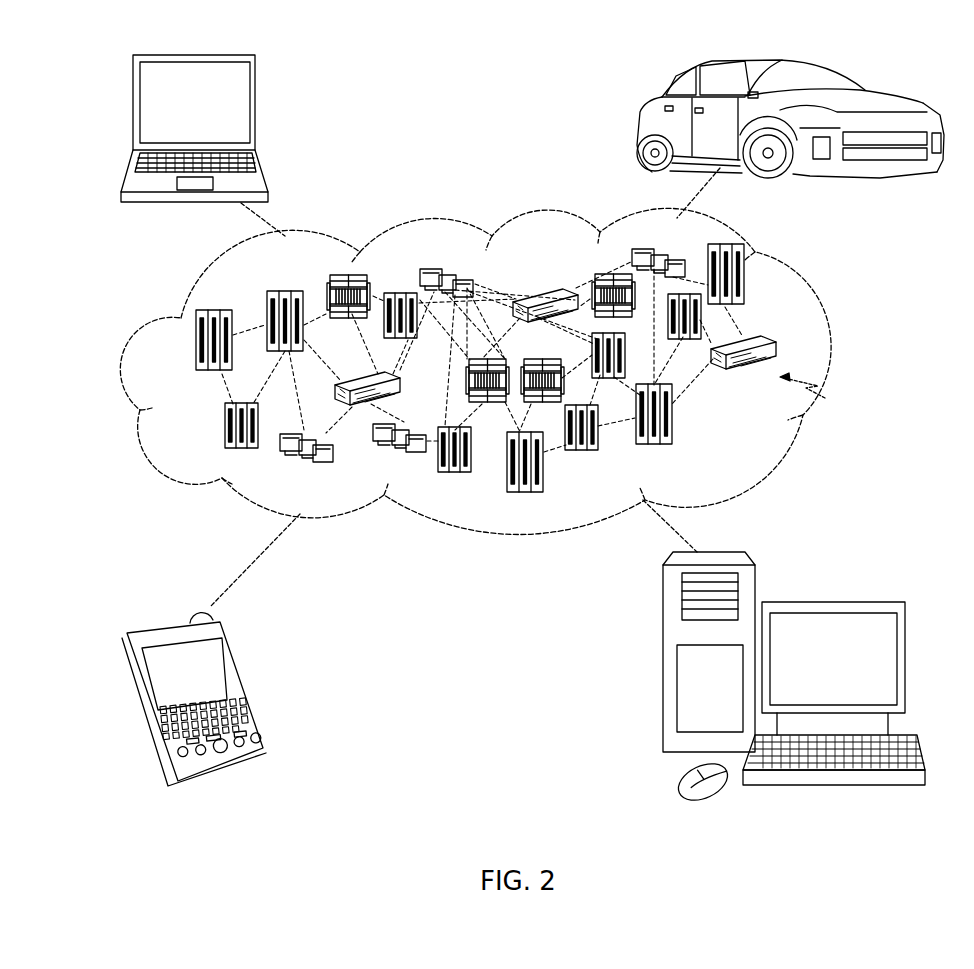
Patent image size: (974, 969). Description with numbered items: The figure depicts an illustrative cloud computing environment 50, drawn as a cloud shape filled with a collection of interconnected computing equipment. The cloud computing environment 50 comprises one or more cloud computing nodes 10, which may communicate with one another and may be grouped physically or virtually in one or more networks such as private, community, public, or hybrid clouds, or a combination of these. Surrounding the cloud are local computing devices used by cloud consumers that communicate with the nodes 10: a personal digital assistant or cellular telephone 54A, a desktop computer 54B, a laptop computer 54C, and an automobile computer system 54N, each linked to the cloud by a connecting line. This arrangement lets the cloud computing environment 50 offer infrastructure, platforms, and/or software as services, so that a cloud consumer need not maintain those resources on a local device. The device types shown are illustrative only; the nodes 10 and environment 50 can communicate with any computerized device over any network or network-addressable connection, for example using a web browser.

The cloud computing node 10 is at (823, 400).
The cloud computing environment 50 is at (833, 350).
The personal digital assistant (PDA) or cellular telephone 54A is at (243, 685).
The desktop computer 54B is at (831, 600).
The laptop computer 54C is at (256, 108).
The automobile computer system 54N is at (640, 120).